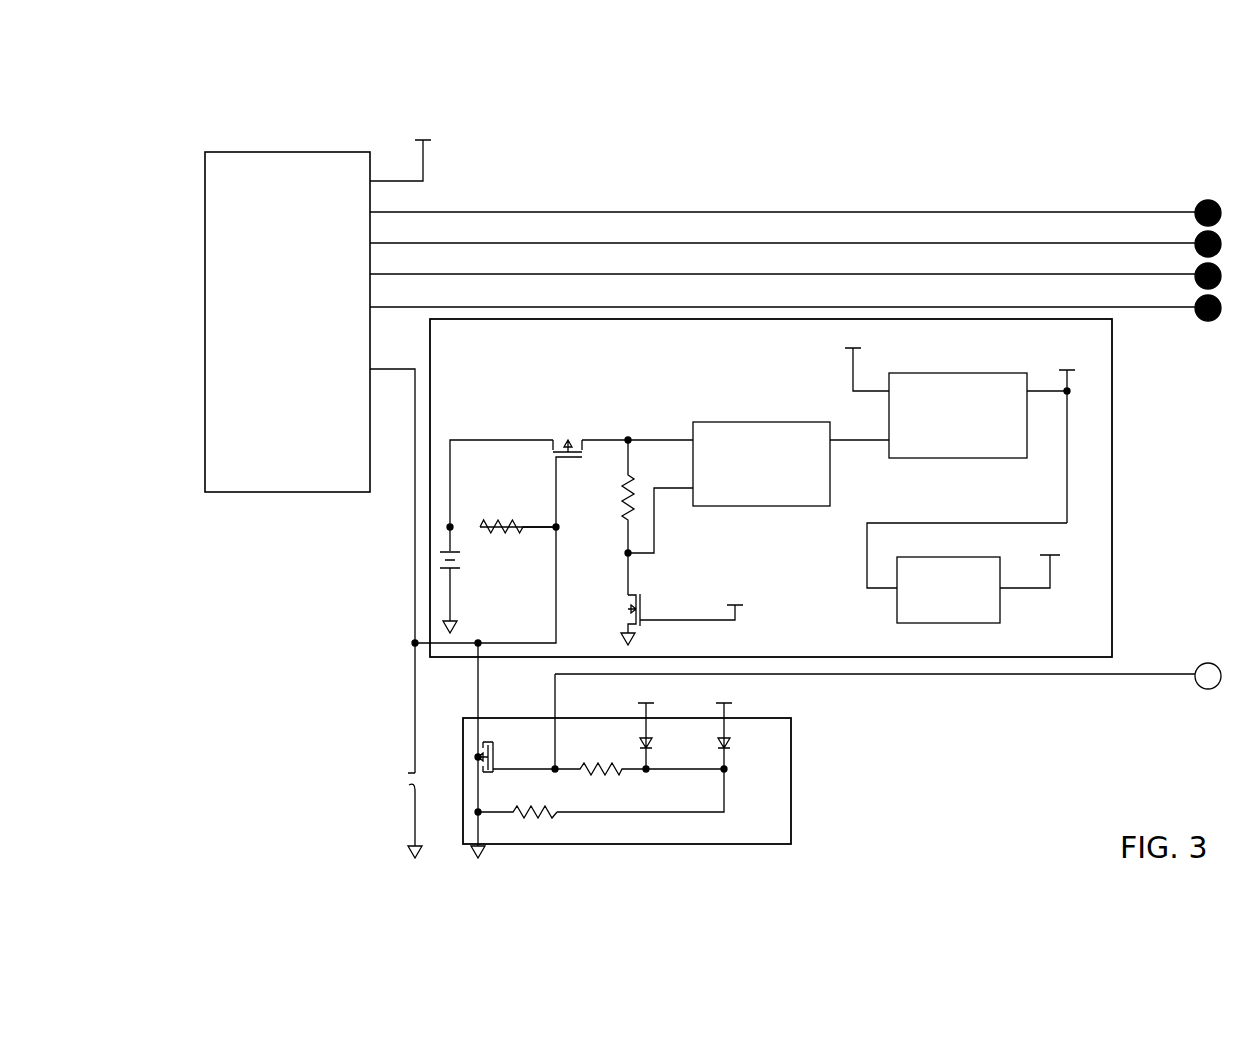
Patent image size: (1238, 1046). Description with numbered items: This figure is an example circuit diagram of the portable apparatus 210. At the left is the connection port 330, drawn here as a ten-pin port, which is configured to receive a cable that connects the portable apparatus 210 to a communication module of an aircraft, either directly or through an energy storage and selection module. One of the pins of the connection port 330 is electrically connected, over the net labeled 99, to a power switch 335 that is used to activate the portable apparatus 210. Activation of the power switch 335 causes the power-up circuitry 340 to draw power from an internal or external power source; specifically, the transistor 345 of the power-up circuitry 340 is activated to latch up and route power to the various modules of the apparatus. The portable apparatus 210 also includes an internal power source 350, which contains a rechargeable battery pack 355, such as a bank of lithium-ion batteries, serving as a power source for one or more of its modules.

The portable apparatus 210 is at (237, 90).
The connection port 330 is at (262, 152).
The internal power source 350 is at (430, 513).
The rechargeable battery pack 355 is at (445, 569).
The power switch net 99 is at (394, 571).
The transistor 345 is at (478, 765).
The power-up circuitry 340 is at (791, 780).
The power switch 335 is at (397, 777).